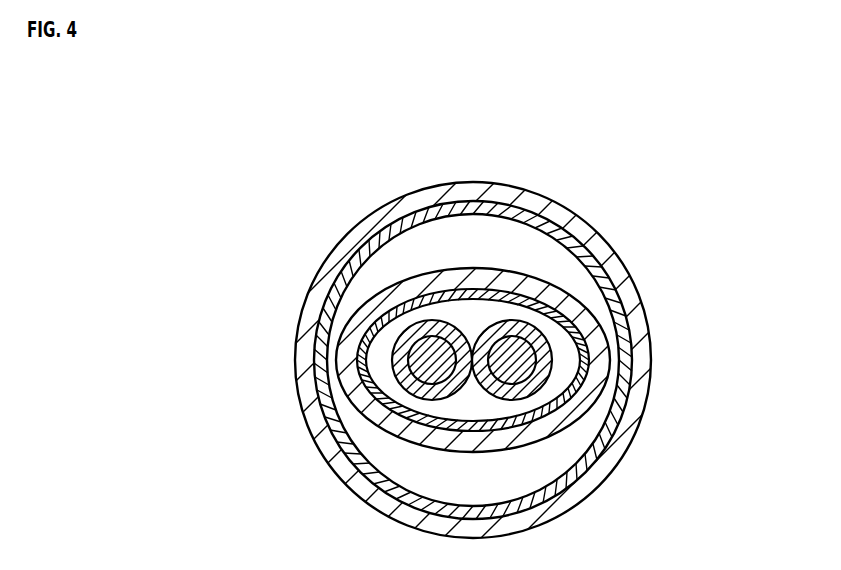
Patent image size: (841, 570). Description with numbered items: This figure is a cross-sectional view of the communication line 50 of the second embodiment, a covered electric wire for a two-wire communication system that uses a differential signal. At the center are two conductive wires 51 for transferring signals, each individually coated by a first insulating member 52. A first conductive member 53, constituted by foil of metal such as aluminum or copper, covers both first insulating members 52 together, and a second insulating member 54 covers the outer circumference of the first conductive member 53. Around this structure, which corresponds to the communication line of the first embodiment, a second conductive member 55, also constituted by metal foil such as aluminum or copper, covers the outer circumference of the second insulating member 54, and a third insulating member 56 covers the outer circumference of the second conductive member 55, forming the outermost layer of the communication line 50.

The communication line 50 is at (744, 160).
The conductive wire 51 is at (420, 357).
The first insulating member 52 is at (400, 375).
The first conductive member 53 is at (557, 318).
The second insulating member 54 is at (518, 280).
The second conductive member 55 is at (472, 205).
The third insulating member 56 is at (437, 192).